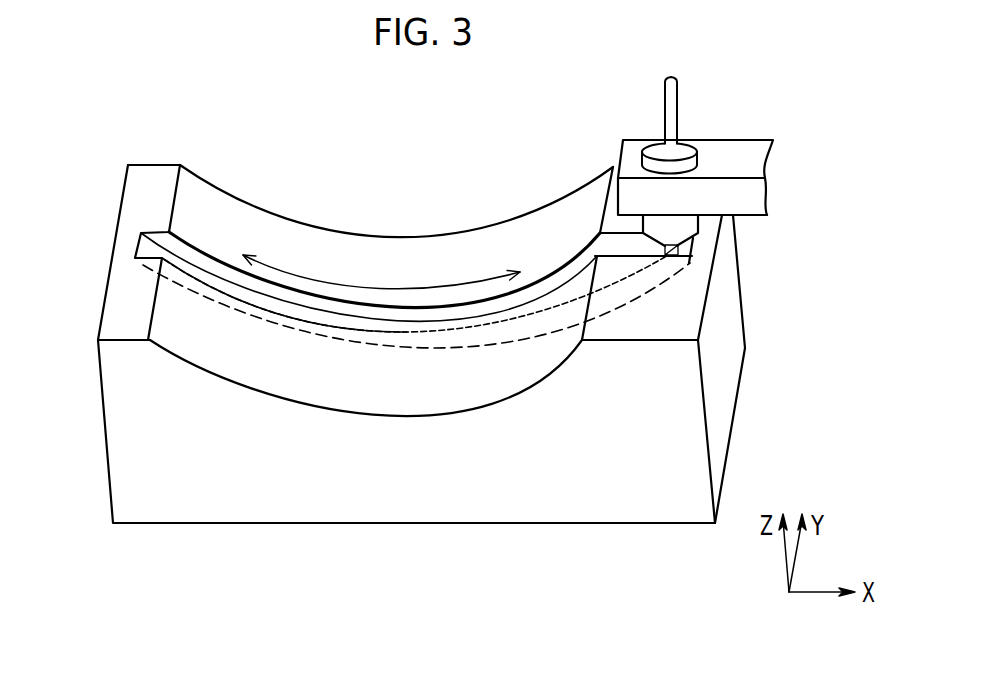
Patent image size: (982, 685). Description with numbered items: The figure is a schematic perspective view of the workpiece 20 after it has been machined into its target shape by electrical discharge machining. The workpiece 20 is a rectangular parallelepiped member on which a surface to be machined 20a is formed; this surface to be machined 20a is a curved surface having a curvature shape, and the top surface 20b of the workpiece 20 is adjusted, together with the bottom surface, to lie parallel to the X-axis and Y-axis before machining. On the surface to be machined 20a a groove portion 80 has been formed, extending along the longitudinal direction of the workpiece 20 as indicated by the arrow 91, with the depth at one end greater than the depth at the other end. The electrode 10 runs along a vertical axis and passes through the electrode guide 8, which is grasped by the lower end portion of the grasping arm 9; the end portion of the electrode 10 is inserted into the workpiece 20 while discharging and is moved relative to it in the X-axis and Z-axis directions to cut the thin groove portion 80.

The electrode guide 8 is at (684, 148).
The grasping arm 9 is at (760, 160).
The electrode 10 is at (665, 93).
The workpiece 20 is at (723, 410).
The surface to be machined 20a is at (183, 338).
The top surface 20b is at (123, 303).
The groove portion 80 is at (195, 258).
The arrow 91 is at (458, 287).